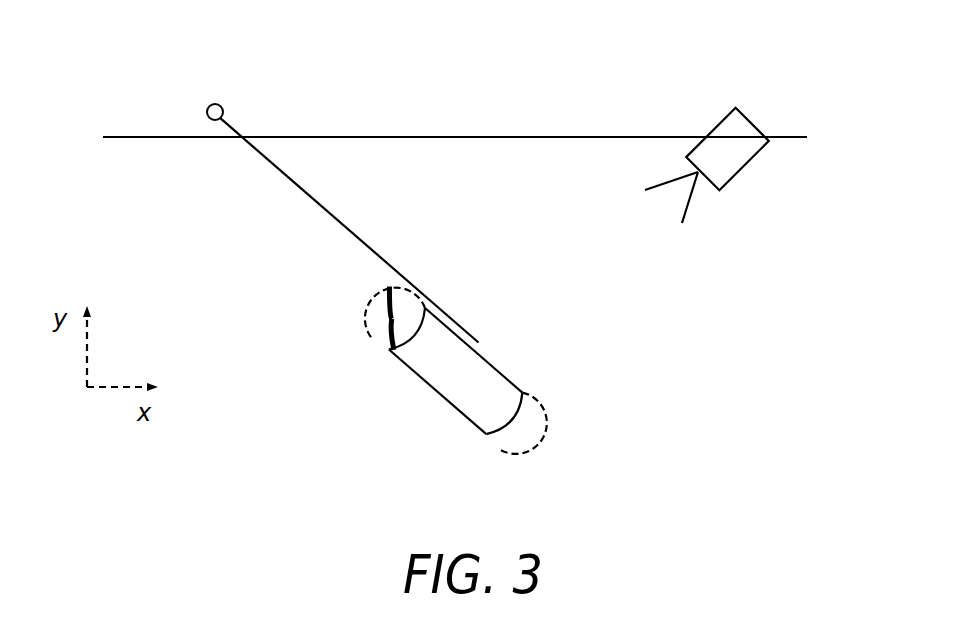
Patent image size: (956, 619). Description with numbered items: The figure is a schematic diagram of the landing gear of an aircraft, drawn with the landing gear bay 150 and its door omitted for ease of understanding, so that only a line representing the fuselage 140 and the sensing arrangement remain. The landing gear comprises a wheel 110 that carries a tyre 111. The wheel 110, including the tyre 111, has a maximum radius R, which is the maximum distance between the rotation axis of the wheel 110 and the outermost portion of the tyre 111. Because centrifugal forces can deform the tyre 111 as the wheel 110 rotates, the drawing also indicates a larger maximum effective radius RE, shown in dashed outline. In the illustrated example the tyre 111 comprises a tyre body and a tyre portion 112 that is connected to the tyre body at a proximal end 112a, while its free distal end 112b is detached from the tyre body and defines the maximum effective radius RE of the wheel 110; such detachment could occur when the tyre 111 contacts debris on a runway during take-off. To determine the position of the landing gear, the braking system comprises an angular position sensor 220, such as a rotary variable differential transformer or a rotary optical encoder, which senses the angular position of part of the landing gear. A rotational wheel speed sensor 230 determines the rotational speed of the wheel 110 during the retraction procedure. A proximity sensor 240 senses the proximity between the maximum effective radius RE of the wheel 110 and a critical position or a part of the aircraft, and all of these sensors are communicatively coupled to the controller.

The landing gear bay 150 is at (527, 73).
The fuselage 140 is at (341, 134).
The angular position sensor 220 is at (207, 106).
The rotational wheel speed sensor 230 is at (482, 340).
The proximity sensor 240 is at (746, 106).
The wheel 110 is at (413, 371).
The tyre 111 is at (431, 405).
The tyre portion 112 is at (383, 311).
The proximal end 112a is at (383, 338).
The distal end 112b is at (386, 288).
The maximum radius R is at (487, 435).
The maximum effective radius RE is at (540, 445).